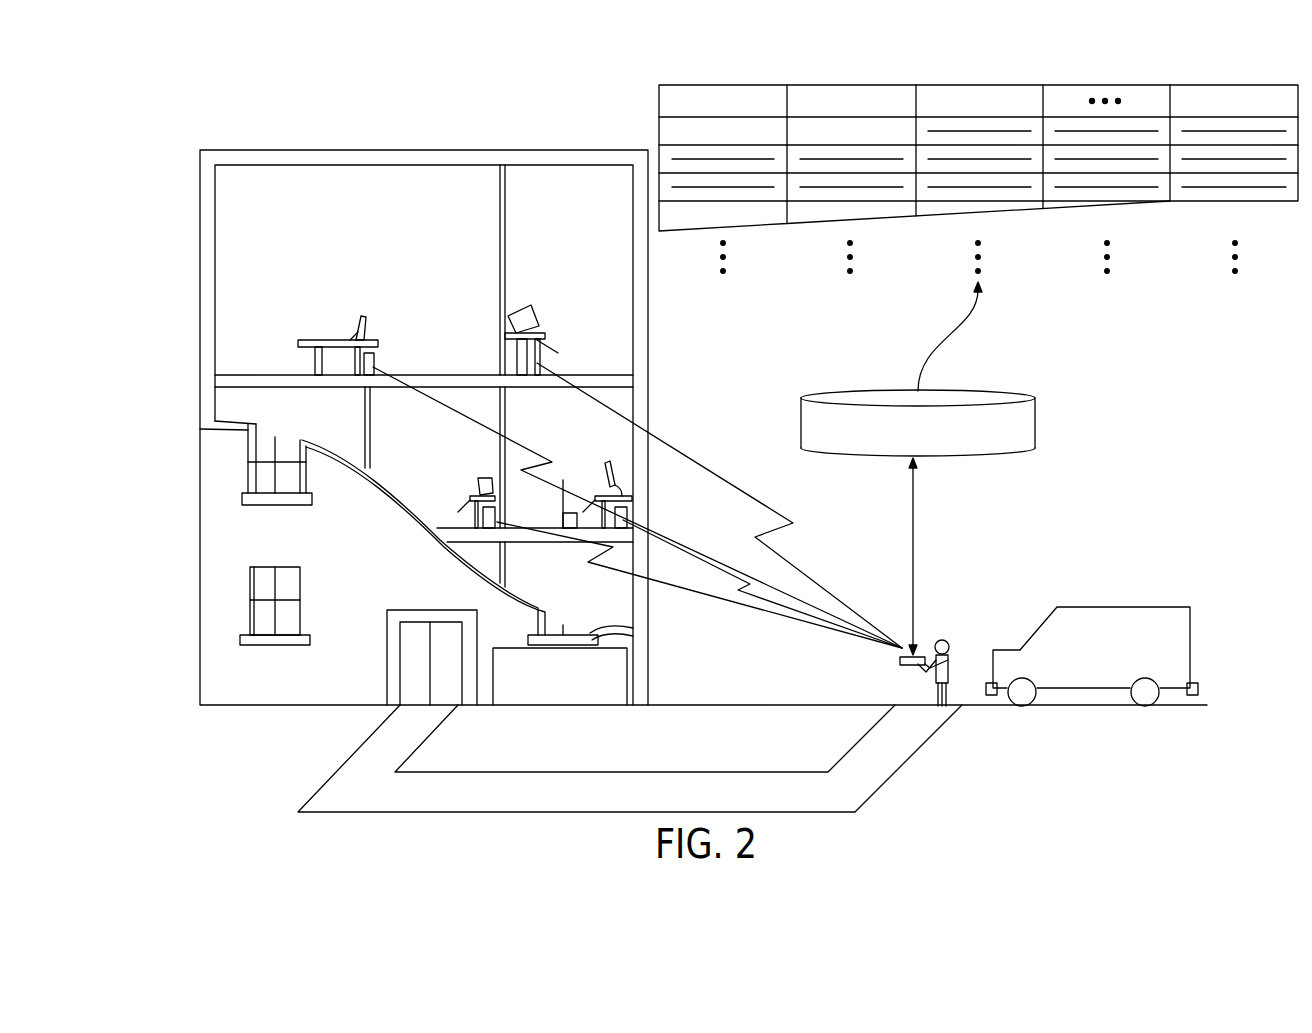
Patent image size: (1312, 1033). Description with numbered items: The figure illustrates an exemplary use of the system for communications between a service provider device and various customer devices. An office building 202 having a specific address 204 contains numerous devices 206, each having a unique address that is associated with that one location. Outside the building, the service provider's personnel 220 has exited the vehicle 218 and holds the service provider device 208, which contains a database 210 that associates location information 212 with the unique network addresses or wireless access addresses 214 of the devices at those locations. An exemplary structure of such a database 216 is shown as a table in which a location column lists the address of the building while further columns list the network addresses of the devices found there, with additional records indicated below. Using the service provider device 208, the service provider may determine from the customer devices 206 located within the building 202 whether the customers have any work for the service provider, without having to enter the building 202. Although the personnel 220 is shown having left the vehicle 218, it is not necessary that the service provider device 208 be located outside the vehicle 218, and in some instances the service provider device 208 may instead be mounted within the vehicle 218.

The office building 202 is at (200, 540).
The specific address 204 is at (628, 680).
The devices 206 is at (375, 358).
The service provider device 208 is at (898, 662).
The database 210 is at (1035, 425).
The location information 212 is at (682, 95).
The unique network addresses or wireless access addresses 214 is at (810, 95).
The database structure 216 is at (1158, 252).
The vehicle 218 is at (1118, 607).
The service provider's personnel 220 is at (956, 663).